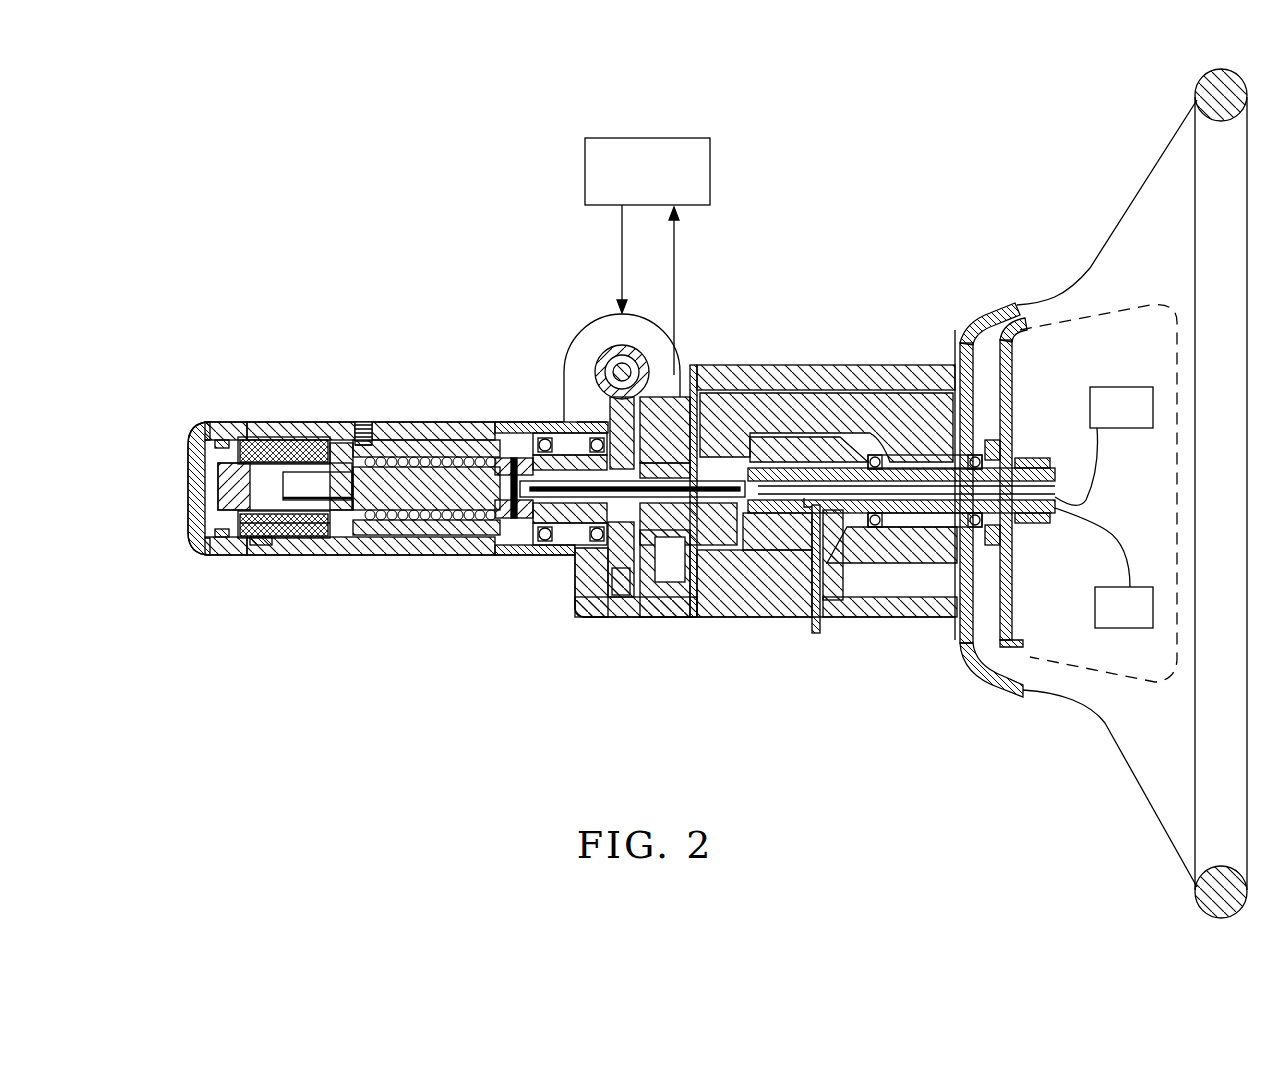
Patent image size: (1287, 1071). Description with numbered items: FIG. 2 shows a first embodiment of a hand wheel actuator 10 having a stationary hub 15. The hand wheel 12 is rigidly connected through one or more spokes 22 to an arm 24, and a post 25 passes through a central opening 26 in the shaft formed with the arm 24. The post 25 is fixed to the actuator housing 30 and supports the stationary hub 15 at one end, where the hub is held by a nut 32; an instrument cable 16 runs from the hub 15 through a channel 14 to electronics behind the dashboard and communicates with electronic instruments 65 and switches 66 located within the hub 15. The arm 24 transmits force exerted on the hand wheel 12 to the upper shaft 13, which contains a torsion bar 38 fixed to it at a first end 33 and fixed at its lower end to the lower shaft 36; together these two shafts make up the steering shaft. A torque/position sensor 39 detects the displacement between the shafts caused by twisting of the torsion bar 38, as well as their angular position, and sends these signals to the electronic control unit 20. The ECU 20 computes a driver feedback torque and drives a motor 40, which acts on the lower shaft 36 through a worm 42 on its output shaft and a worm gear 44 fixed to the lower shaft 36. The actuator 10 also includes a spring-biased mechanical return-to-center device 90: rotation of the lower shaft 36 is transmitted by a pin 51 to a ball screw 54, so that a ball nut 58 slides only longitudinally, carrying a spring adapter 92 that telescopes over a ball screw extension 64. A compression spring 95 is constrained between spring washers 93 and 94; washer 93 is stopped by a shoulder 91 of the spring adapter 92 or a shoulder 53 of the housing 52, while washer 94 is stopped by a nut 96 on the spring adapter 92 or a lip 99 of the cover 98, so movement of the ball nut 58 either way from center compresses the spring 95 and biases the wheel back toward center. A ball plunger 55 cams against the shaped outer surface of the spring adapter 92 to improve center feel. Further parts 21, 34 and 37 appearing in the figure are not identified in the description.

The hand wheel actuator 10 is at (530, 152).
The hand wheel 12 is at (1190, 195).
The upper shaft 13 is at (738, 590).
The channel 14 is at (946, 478).
The stationary hub 15 is at (1107, 318).
The instrument cable 16 is at (850, 597).
The electronic control unit 20 is at (712, 140).
The bearings 21 is at (887, 450).
The spokes 22 is at (975, 692).
The arm 24 is at (820, 405).
The post 25 is at (905, 528).
The central opening 26 is at (905, 530).
The actuator housing 30 is at (888, 620).
The nut 32 is at (1040, 522).
The first end 33 is at (712, 440).
The inner shell 34 is at (1005, 568).
The lower shaft 36 is at (511, 548).
The bearings 37 is at (560, 420).
The torsion bar 38 is at (650, 618).
The torque/position sensor 39 is at (665, 585).
The motor 40 is at (568, 352).
The worm 42 is at (602, 335).
The worm gear 44 is at (600, 612).
The pin 51 is at (478, 545).
The housing 52 is at (430, 420).
The shoulder 53 is at (325, 440).
The ball screw 54 is at (571, 526).
The ball plunger 55 is at (368, 425).
The ball nut 58 is at (400, 540).
The ball screw extension 64 is at (244, 540).
The electronic instruments 65 is at (1123, 622).
The switches 66 is at (1125, 405).
The spring-biased mechanical return-to-center device 90 is at (292, 315).
The shoulder 91 is at (312, 540).
The spring adapter 92 is at (352, 540).
The spring washer 93 is at (300, 440).
The spring washer 94 is at (250, 432).
The compression spring 95 is at (265, 545).
The nut 96 is at (224, 440).
The cover 98 is at (198, 425).
The lip 99 is at (245, 525).